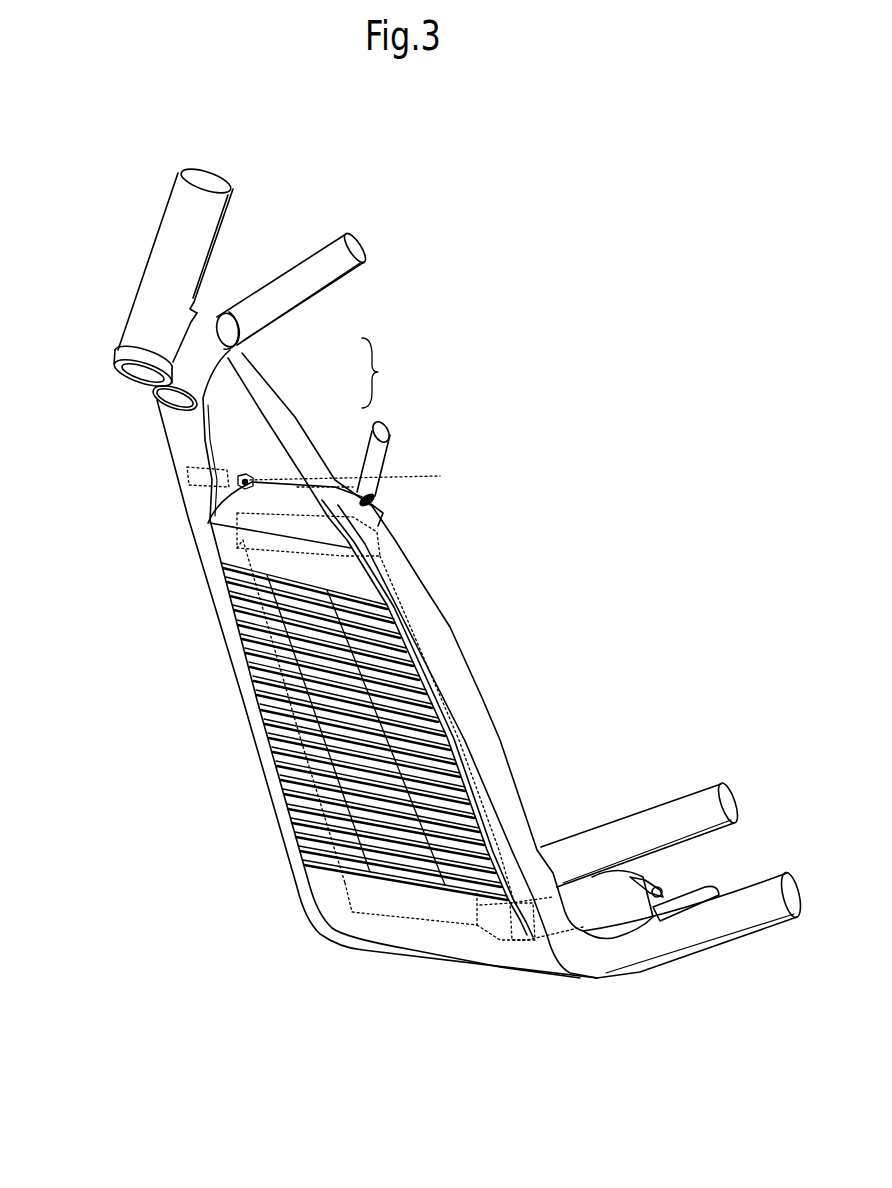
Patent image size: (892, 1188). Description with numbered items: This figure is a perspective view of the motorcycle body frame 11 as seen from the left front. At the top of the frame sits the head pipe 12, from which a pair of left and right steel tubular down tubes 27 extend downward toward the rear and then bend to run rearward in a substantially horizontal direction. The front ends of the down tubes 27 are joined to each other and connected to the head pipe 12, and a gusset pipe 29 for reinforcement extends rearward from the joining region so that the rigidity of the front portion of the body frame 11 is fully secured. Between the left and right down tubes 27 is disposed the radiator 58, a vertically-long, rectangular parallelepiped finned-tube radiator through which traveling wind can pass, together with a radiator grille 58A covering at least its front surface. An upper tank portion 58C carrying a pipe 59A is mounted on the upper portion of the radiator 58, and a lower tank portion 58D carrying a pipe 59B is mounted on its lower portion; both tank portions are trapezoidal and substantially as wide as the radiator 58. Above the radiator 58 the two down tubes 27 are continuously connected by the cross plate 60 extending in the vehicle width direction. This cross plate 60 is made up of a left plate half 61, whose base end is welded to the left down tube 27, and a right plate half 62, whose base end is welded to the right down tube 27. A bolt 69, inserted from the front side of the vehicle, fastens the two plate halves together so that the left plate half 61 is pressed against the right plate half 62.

The body frame 11 is at (575, 318).
The head pipe 12 is at (167, 260).
The down tube 27 is at (188, 492).
The gusset pipe 29 is at (300, 268).
The radiator 58 is at (447, 690).
The radiator grille 58A is at (333, 817).
The upper tank portion 58C is at (380, 530).
The lower tank portion 58D is at (398, 903).
The pipe 59A is at (373, 500).
The pipe 59B is at (497, 933).
The cross plate 60 is at (382, 373).
The left plate half 61 is at (282, 475).
The right plate half 62 is at (225, 467).
The bolt 69 is at (243, 483).